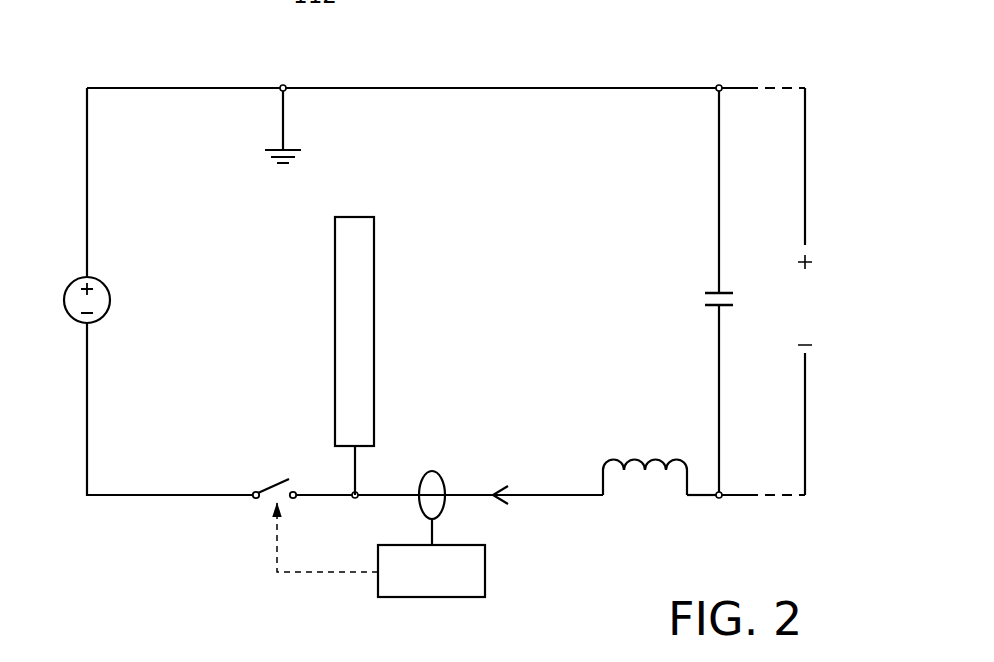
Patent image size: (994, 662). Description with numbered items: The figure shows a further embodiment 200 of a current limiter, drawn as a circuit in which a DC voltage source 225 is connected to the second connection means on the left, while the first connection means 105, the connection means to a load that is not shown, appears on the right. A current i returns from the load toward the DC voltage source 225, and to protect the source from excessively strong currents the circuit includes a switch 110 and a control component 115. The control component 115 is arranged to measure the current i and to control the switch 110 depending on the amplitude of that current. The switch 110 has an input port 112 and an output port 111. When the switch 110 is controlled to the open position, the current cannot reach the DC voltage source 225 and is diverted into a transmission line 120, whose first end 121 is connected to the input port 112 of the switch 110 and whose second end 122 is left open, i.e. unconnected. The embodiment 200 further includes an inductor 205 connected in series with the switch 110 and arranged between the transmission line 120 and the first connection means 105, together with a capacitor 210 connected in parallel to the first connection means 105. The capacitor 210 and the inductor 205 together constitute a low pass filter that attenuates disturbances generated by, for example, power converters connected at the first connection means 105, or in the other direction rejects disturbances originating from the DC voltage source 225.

The current limiter embodiment 200 is at (765, 48).
The DC voltage source 225 is at (103, 272).
The transmission line 120 is at (325, 290).
The second end 122 is at (353, 202).
The first end 121 is at (345, 460).
The switch 110 is at (248, 478).
The output port 111 is at (254, 498).
The input port 112 is at (294, 498).
The control component 115 is at (495, 573).
The inductor 205 is at (653, 498).
The capacitor 210 is at (703, 272).
The first connection means 105 is at (810, 315).